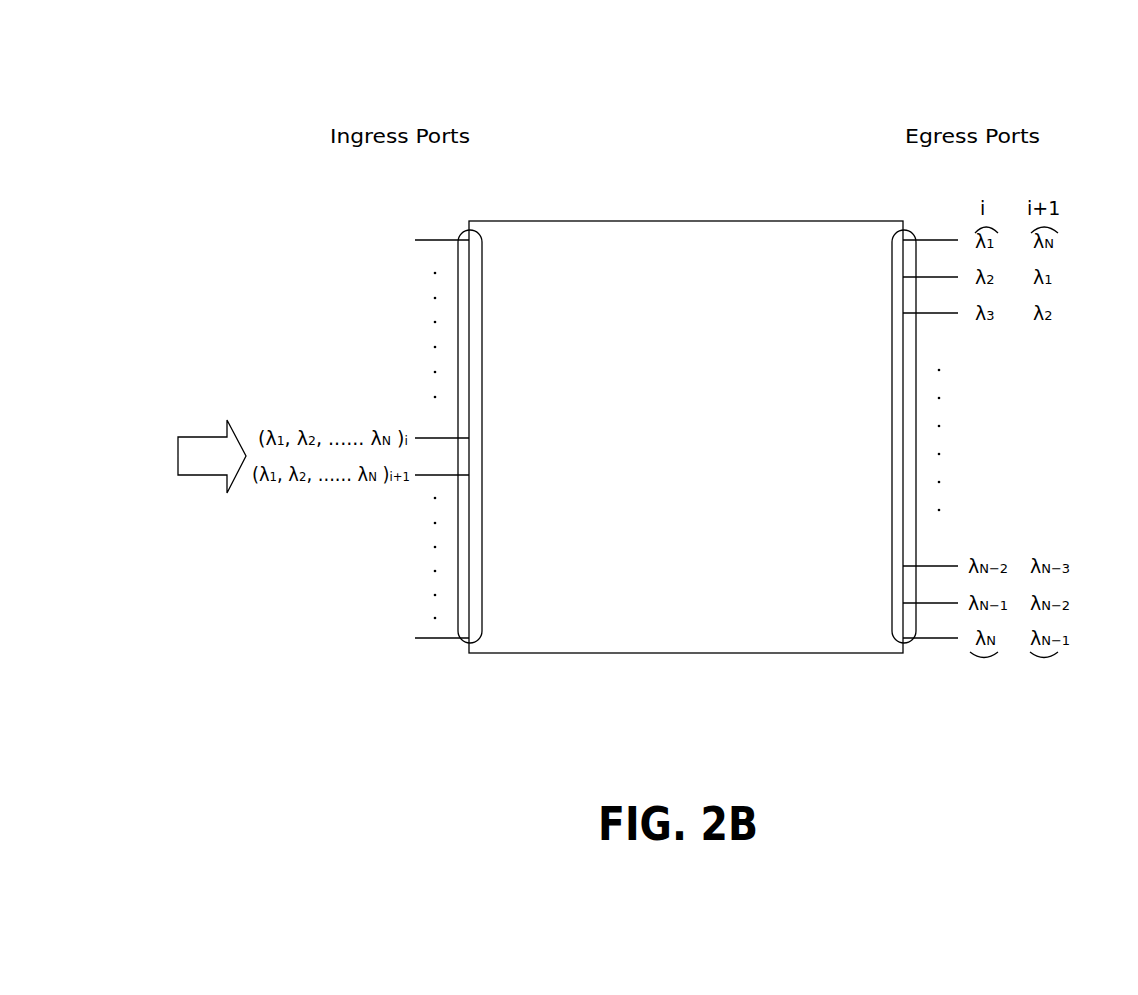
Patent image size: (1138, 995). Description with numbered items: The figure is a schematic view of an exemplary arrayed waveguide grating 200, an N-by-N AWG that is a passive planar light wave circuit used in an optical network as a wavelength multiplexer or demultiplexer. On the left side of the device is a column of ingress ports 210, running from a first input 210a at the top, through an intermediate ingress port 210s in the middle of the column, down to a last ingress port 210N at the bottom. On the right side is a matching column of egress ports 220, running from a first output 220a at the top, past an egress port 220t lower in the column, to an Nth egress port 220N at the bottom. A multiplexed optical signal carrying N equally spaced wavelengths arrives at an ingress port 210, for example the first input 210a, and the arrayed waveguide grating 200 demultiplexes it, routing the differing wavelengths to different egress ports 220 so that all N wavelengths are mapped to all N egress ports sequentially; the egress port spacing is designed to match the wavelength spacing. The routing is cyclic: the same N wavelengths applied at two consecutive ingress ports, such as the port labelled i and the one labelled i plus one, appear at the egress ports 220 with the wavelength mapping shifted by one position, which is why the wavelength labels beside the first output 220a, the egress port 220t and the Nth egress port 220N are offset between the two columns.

The arrayed waveguide grating 200 is at (707, 98).
The ingress port 210 is at (462, 645).
The first input 210a is at (437, 240).
The ingress port i 210s is at (435, 437).
The Nth ingress port 210N is at (432, 640).
The egress ports 220 is at (910, 643).
The output 220a is at (924, 240).
The egress port t 220t is at (938, 566).
The Nth egress port 220N is at (929, 640).